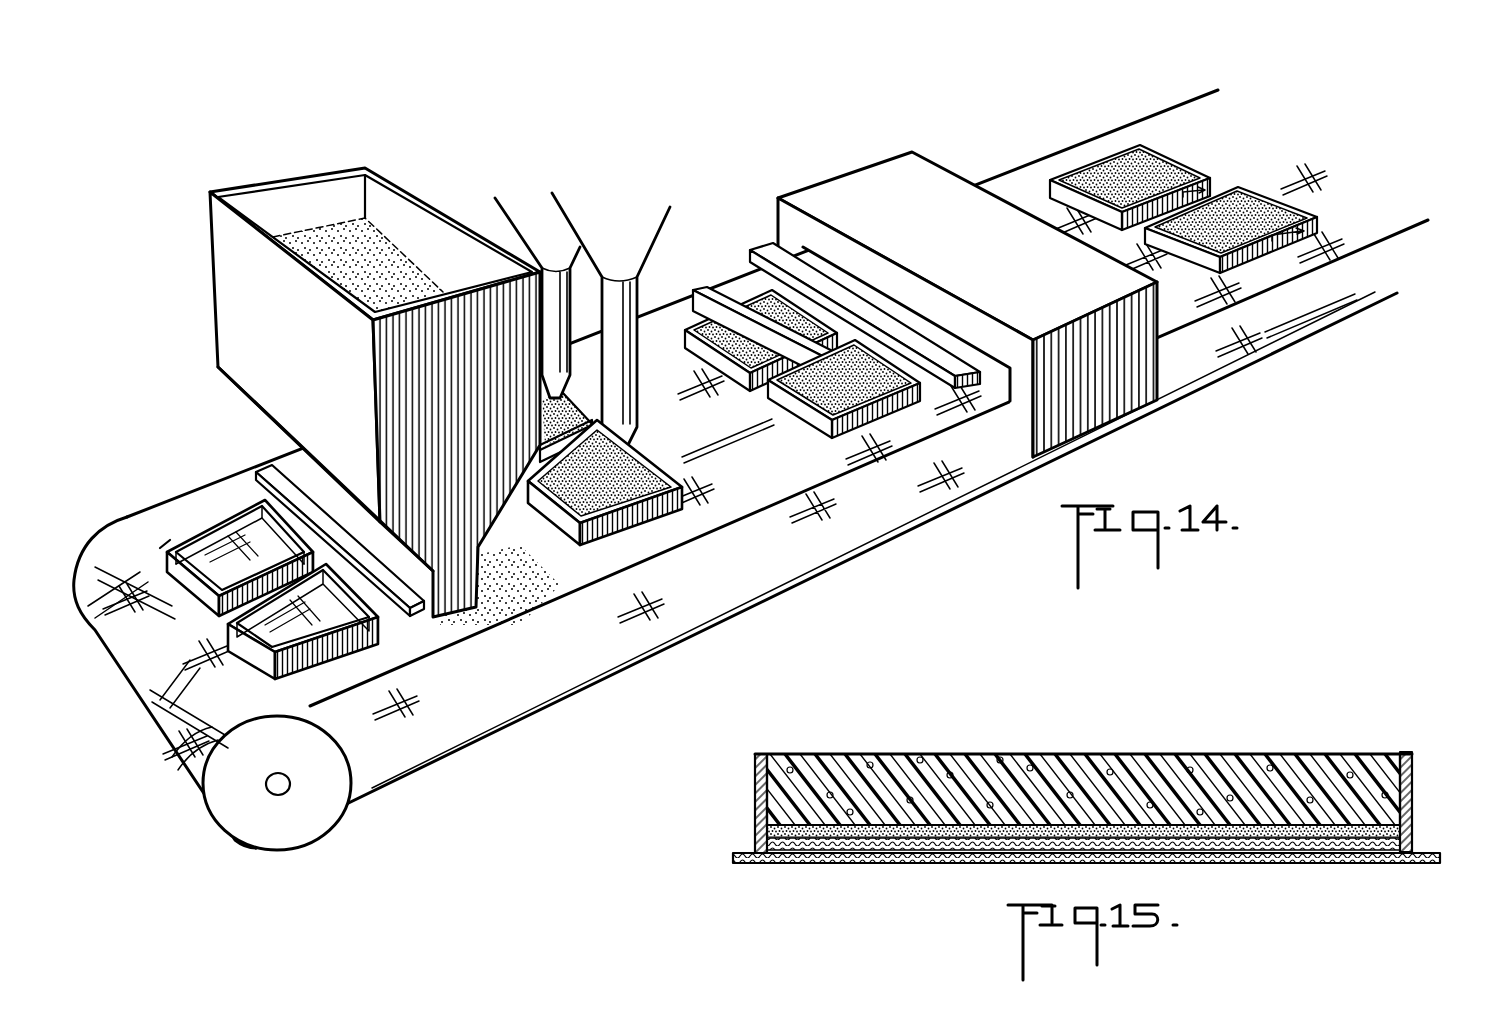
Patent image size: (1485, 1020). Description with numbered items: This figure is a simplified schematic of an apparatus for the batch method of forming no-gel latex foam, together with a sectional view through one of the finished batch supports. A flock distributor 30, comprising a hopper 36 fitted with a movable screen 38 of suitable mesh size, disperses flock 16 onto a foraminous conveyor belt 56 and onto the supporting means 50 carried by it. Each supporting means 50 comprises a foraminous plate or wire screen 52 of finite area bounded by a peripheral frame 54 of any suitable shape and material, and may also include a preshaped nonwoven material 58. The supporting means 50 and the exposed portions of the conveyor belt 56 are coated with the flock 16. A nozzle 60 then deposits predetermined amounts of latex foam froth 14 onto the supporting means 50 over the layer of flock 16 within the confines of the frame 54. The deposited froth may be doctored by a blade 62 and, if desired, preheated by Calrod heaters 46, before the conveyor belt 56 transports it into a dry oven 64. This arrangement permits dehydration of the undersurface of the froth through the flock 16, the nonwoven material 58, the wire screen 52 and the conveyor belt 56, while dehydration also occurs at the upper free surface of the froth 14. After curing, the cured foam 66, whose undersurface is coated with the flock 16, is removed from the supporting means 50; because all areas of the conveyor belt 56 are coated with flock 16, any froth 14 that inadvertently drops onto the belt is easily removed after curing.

In FIG. 14, the latex foam froth 14 is at (641, 488).
In FIG. 14, the flock 16 is at (493, 593).
In FIG. 15, the flock 16 is at (1410, 812).
In FIG. 14, the flock distributor 30 is at (290, 170).
In FIG. 14, the hopper 36 is at (227, 300).
In FIG. 14, the movable screen 38 is at (421, 610).
In FIG. 14, the Calrod heaters 46 is at (760, 247).
In FIG. 14, the supporting means 50 is at (191, 516).
In FIG. 14, the wire screen 52 is at (240, 540).
In FIG. 15, the wire screen 52 is at (767, 847).
In FIG. 14, the peripheral frame 54 is at (172, 559).
In FIG. 15, the peripheral frame 54 is at (753, 785).
In FIG. 14, the conveyor belt 56 is at (172, 503).
In FIG. 15, the conveyor belt 56 is at (783, 863).
In FIG. 15, the nonwoven material 58 is at (765, 837).
In FIG. 14, the nozzle 60 is at (609, 321).
In FIG. 14, the blade 62 is at (700, 288).
In FIG. 14, the dry oven 64 is at (832, 195).
In FIG. 14, the cured foam 66 is at (1228, 200).
In FIG. 15, the cured foam 66 is at (873, 772).